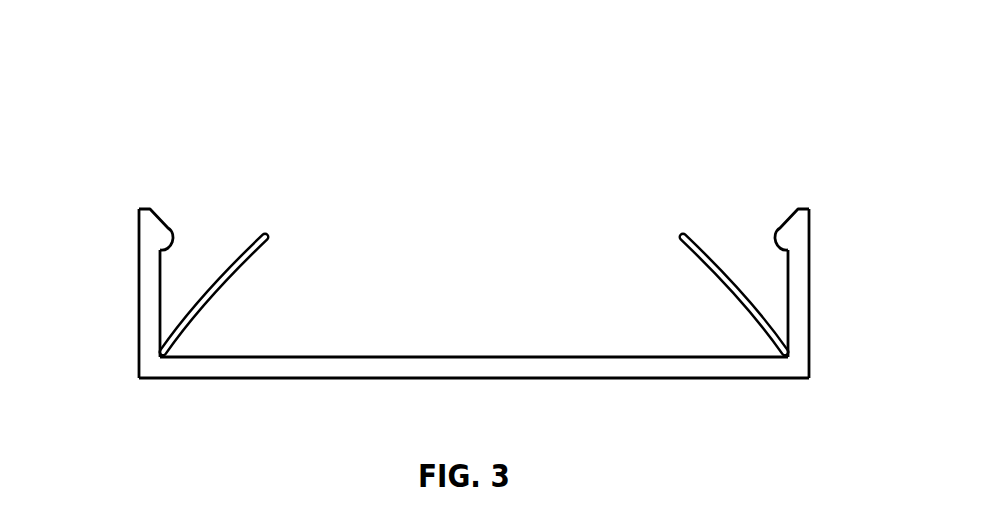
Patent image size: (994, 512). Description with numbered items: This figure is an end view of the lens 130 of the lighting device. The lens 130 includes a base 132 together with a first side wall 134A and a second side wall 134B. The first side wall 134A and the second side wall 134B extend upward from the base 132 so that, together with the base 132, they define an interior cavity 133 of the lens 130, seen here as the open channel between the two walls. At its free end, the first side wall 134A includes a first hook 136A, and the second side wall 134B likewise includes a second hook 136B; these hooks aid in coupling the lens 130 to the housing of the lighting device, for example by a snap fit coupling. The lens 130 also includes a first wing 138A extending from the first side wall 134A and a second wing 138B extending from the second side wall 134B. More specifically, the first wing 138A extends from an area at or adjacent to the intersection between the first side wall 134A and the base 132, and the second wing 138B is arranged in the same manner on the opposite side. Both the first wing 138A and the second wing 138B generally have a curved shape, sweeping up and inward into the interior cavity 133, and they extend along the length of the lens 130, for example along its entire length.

The lens 130 is at (172, 55).
The base 132 is at (478, 366).
The interior cavity 133 is at (455, 233).
The first side wall 134A is at (148, 286).
The second side wall 134B is at (800, 286).
The first hook 136A is at (158, 225).
The second hook 136B is at (790, 225).
The first wing 138A is at (245, 280).
The second wing 138B is at (707, 280).